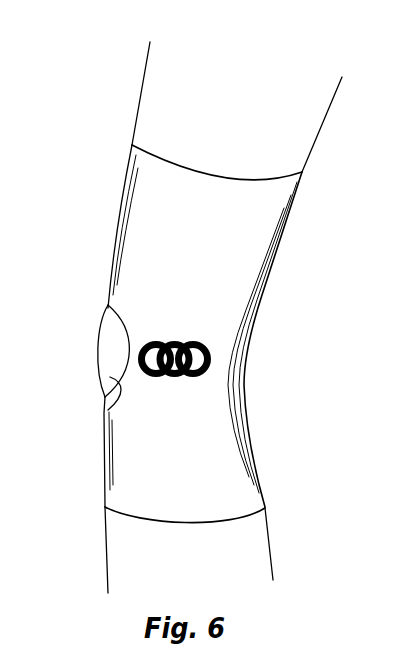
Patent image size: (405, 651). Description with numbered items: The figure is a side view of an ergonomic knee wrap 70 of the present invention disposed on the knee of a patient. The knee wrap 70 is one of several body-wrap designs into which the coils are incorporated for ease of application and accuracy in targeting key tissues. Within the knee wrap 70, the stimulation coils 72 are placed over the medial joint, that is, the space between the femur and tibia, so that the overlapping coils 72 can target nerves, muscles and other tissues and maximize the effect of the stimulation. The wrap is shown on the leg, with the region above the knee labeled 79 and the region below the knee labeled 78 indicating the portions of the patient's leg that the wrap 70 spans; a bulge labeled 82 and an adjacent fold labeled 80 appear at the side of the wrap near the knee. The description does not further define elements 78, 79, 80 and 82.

The knee wrap 70 is at (249, 262).
The stimulation coils 72 is at (213, 358).
The lower leg (calf) 78 is at (238, 554).
The upper leg (thigh) 79 is at (165, 100).
The lower patellar lobe / fold 80 is at (118, 392).
The patellar bulge 82 is at (90, 334).